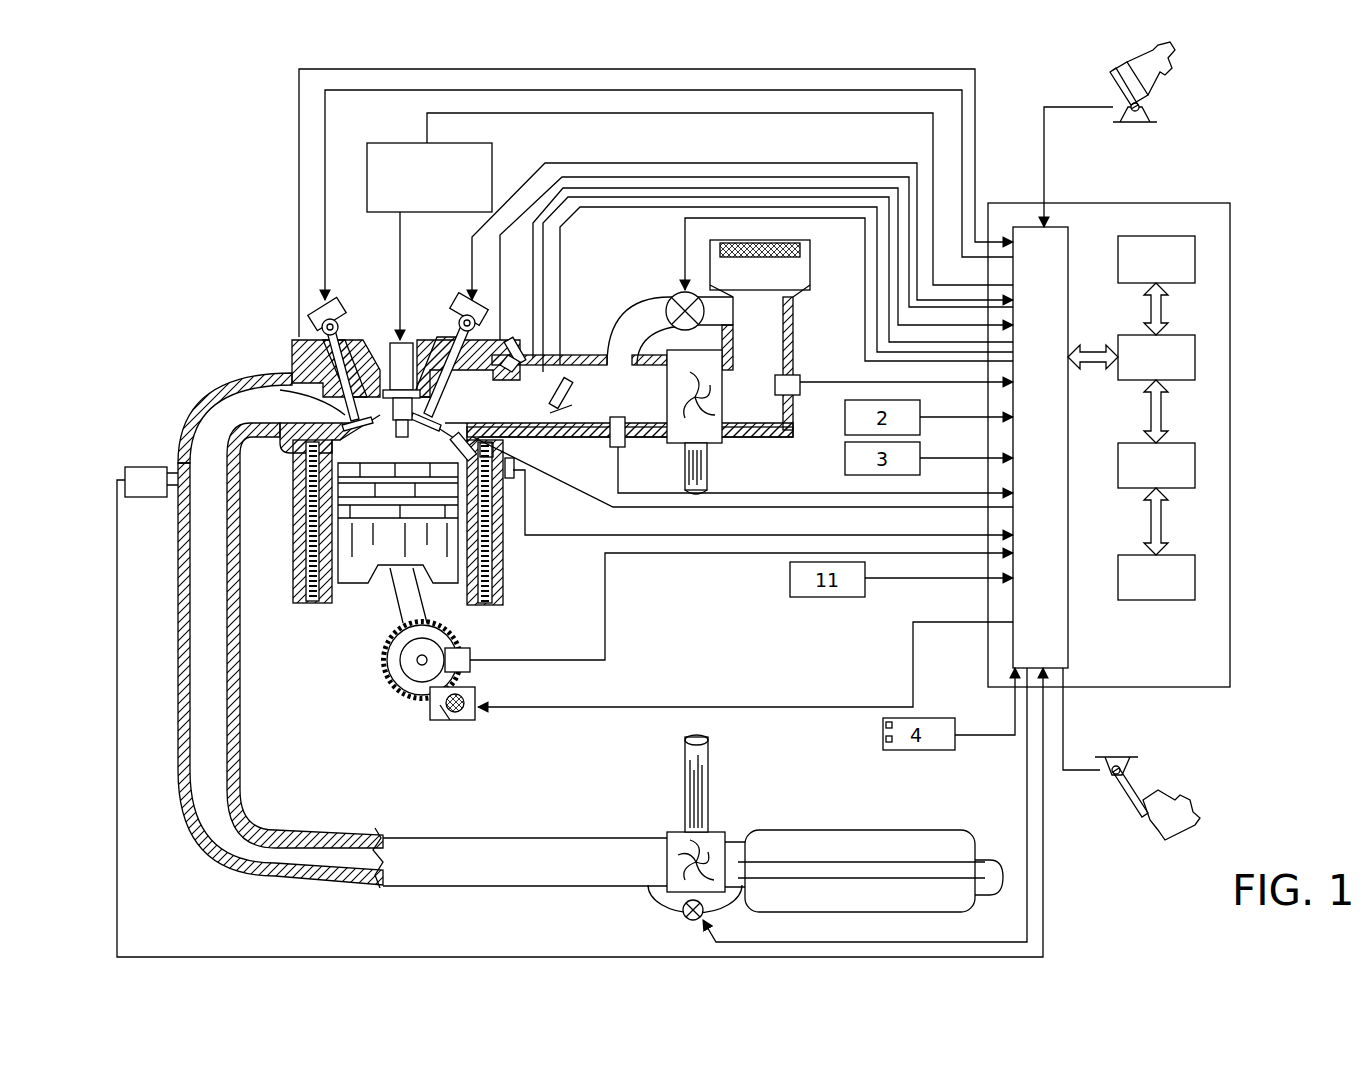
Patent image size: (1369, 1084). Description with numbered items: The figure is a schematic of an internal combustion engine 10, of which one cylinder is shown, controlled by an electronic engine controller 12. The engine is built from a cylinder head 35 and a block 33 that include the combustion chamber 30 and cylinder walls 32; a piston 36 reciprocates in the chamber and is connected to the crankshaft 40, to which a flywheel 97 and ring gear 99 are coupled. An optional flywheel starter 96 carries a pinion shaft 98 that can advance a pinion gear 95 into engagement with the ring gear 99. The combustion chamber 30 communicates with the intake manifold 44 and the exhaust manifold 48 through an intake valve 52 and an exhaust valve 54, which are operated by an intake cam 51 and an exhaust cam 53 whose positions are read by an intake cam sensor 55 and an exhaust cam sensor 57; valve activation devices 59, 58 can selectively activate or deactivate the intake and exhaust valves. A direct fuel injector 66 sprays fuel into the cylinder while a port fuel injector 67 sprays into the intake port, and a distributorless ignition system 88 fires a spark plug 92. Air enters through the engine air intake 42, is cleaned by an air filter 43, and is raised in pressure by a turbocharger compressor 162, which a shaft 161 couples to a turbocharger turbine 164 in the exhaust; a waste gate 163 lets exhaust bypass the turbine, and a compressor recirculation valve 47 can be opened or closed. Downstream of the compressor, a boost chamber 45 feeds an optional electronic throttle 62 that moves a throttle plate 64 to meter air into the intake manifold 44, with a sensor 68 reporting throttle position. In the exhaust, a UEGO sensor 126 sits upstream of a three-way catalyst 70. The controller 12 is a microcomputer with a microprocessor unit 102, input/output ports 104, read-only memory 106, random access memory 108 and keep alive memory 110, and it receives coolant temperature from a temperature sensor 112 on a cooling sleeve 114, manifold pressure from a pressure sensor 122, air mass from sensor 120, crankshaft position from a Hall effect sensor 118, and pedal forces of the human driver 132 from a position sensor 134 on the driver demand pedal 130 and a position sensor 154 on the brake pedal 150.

The internal combustion engine 10 is at (222, 290).
The electronic engine controller 12 is at (1232, 205).
The combustion chamber 30 is at (372, 522).
The cylinder walls 32 is at (322, 630).
The block 33 is at (292, 490).
The cylinder head 35 is at (291, 340).
The piston 36 is at (380, 605).
The crankshaft 40 is at (405, 690).
The engine air intake 42 is at (740, 359).
The air filter 43 is at (775, 260).
The intake manifold 44 is at (579, 383).
The boost chamber 45 is at (627, 401).
The compressor recirculation valve 47 is at (675, 298).
The exhaust manifold 48 is at (422, 642).
The intake cam 51 is at (470, 305).
The intake valve 52 is at (448, 420).
The exhaust cam 53 is at (332, 305).
The exhaust valve 54 is at (292, 378).
The intake cam sensor 55 is at (489, 322).
The exhaust cam sensor 57 is at (318, 318).
The valve activation device 58 is at (338, 322).
The valve activation device 59 is at (456, 326).
The electronic throttle 62 is at (565, 398).
The throttle plate 64 is at (568, 410).
The direct fuel injector 66 is at (520, 472).
The port fuel injector 67 is at (517, 347).
The throttle position sensor 68 is at (555, 364).
The three-way catalyst 70 is at (793, 830).
The distributorless ignition system 88 is at (493, 155).
The spark plug 92 is at (401, 345).
The pinion gear 95 is at (457, 725).
The flywheel starter 96 is at (703, 693).
The flywheel 97 is at (384, 660).
The pinion shaft 98 is at (442, 722).
The ring gear 99 is at (400, 700).
The microprocessor unit 102 is at (1196, 355).
The input/output ports 104 is at (1069, 238).
The read-only memory 106 is at (1196, 258).
The random access memory 108 is at (1196, 465).
The keep alive memory 110 is at (1196, 578).
The temperature sensor 112 is at (759, 496).
The cooling sleeve 114 is at (493, 578).
The Hall effect sensor 118 is at (473, 648).
The air mass sensor 120 is at (803, 378).
The pressure sensor 122 is at (612, 442).
The Universal Exhaust Gas Oxygen sensor 126 is at (125, 475).
The driver demand pedal 130 is at (1167, 412).
The human driver 132 is at (1175, 80).
The position sensor 134 is at (1160, 113).
The brake pedal 150 is at (1131, 758).
The position sensor 154 is at (1100, 757).
The shaft 161 is at (688, 455).
The turbocharger compressor 162 is at (712, 432).
The waste gate 163 is at (684, 918).
The turbocharger turbine 164 is at (667, 835).